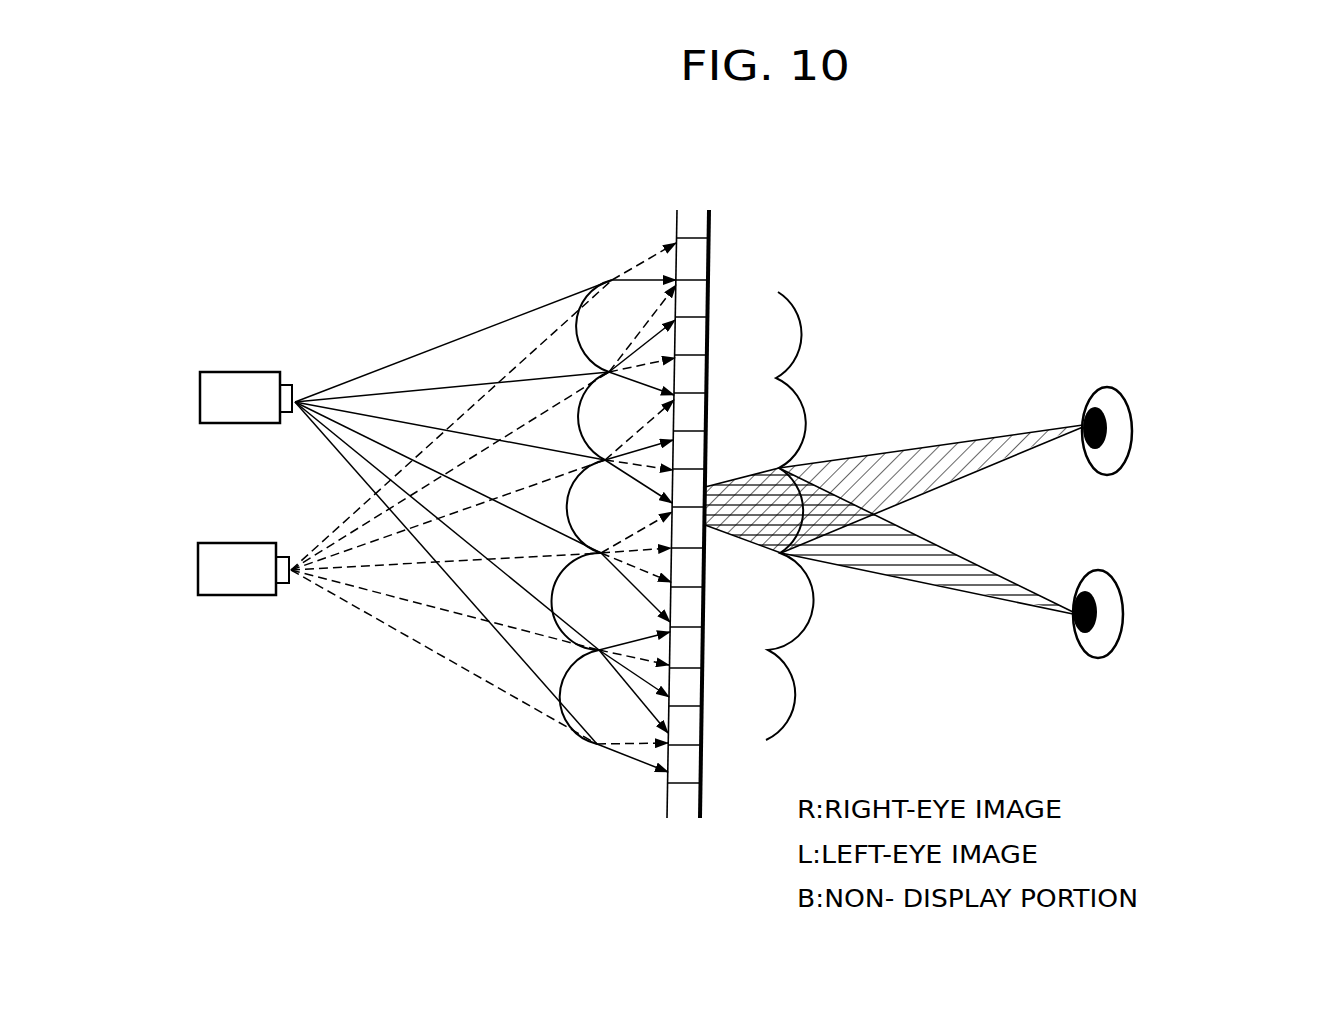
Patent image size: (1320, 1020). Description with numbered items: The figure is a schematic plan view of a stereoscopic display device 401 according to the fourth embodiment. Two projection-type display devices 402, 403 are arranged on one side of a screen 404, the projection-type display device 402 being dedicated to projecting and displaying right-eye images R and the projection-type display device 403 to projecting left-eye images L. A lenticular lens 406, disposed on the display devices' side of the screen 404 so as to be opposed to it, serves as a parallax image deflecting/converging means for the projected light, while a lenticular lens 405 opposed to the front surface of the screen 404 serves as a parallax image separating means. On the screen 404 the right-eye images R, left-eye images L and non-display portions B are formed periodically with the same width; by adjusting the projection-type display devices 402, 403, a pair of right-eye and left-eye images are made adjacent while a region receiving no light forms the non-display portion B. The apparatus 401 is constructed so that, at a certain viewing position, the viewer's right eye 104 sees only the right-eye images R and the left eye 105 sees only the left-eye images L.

The stereoscopic display device 401 is at (536, 223).
The projection-type display device 402 is at (233, 372).
The projection-type display device 403 is at (230, 597).
The screen 404 is at (712, 227).
The lenticular lens 405 is at (778, 292).
The lenticular lens 406 is at (593, 708).
The right eye 104 is at (1108, 387).
The left eye 105 is at (1099, 569).